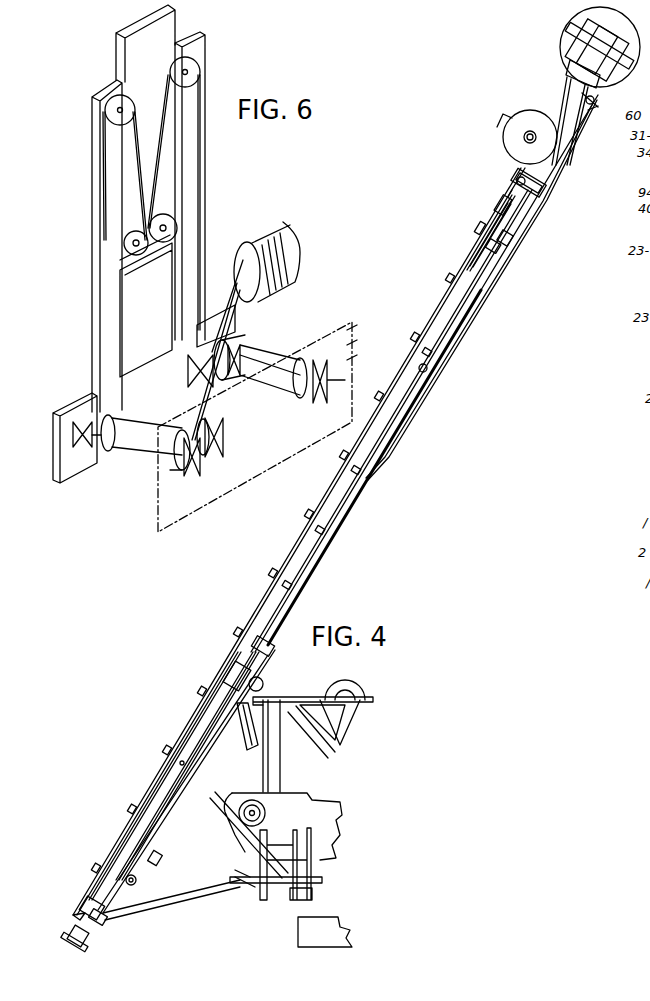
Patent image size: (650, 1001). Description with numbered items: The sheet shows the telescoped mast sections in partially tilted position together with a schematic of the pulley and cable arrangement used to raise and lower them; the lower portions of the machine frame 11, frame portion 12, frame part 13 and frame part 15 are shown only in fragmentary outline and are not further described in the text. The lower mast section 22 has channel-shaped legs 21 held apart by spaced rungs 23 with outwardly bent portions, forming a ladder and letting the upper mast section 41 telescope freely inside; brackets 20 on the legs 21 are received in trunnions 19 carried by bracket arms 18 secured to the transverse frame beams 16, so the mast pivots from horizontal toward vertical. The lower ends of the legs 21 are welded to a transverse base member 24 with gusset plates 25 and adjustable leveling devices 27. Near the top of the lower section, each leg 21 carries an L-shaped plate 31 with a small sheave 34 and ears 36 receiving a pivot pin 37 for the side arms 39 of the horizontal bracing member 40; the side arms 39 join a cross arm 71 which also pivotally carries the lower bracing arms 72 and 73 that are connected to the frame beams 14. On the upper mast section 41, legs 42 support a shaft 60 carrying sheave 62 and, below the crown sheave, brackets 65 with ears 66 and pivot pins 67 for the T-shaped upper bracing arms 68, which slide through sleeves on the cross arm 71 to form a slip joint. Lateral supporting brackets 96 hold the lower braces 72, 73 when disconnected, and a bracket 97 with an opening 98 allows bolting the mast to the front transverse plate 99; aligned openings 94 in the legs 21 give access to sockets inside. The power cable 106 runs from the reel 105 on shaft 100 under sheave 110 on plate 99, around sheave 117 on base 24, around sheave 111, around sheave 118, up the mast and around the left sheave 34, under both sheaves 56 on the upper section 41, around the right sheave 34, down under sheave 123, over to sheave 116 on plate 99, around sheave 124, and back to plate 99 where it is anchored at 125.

In FIG. 4, the support block 11 is at (322, 925).
In FIG. 4, the base machine frame 12 is at (320, 855).
In FIG. 4, the disc 13 is at (362, 693).
In FIG. 4, the frame beam 14 is at (281, 770).
In FIG. 4, the brace bar 15 is at (337, 753).
In FIG. 4, the transverse frame beam 16 is at (270, 688).
In FIG. 4, the bracket arm 18 is at (248, 733).
In FIG. 4, the trunnion 19 is at (262, 682).
In FIG. 4, the bracket 20 is at (242, 668).
In FIG. 4, the leg 21 is at (310, 562).
In FIG. 6, the lower mast section 22 is at (212, 218).
In FIG. 4, the rung 23 is at (450, 284).
In FIG. 6, the base member 24 is at (246, 321).
In FIG. 4, the base member 24 is at (80, 900).
In FIG. 4, the gusset plate 25 is at (76, 917).
In FIG. 4, the adjustable leveling device 27 is at (90, 942).
In FIG. 4, the bracket arm or plate 31 is at (500, 179).
In FIG. 6, the small sheave 34 is at (124, 103).
In FIG. 4, the small sheave 34 is at (496, 201).
In FIG. 4, the ear 36 is at (518, 196).
In FIG. 4, the pivot pin or bolt 37 is at (527, 181).
In FIG. 4, the side arm 39 is at (478, 278).
In FIG. 4, the horizontal bracing member 40 is at (474, 238).
In FIG. 6, the upper mast section 41 is at (142, 19).
In FIG. 4, the upper mast section 41 is at (558, 92).
In FIG. 4, the leg 42 is at (560, 104).
In FIG. 6, the sheave 56 is at (168, 216).
In FIG. 4, the shaft 60 is at (524, 137).
In FIG. 4, the sheave 62 is at (522, 113).
In FIG. 4, the bracket or plate 65 is at (570, 82).
In FIG. 4, the ear 66 is at (596, 97).
In FIG. 4, the pivot pin 67 is at (595, 105).
In FIG. 4, the upper bracing arm 68 is at (530, 208).
In FIG. 4, the cross arm 71 is at (428, 366).
In FIG. 4, the lower bracing arm 72 is at (233, 720).
In FIG. 4, the lower bracing arm 73 is at (312, 582).
In FIG. 4, the aligned opening 94 is at (470, 231).
In FIG. 4, the lateral supporting bracket 96 is at (278, 656).
In FIG. 4, the L-shaped bracket 97 is at (148, 865).
In FIG. 4, the opening 98 is at (160, 855).
In FIG. 6, the front transverse plate 99 is at (158, 512).
In FIG. 4, the front transverse plate 99 is at (240, 855).
In FIG. 4, the shaft 100 is at (257, 811).
In FIG. 6, the reel 105 is at (293, 240).
In FIG. 6, the power cable 106 is at (170, 162).
In FIG. 4, the power cable 106 is at (487, 212).
In FIG. 6, the sheave 110 is at (172, 468).
In FIG. 4, the sheave 110 is at (248, 887).
In FIG. 6, the sheave 111 is at (212, 418).
In FIG. 6, the sheave 116 is at (308, 358).
In FIG. 6, the sheave 117 is at (60, 470).
In FIG. 6, the sheave 118 is at (112, 410).
In FIG. 6, the sheave 123 is at (188, 370).
In FIG. 6, the sheave 124 is at (245, 340).
In FIG. 4, the sheave 124 is at (110, 922).
In FIG. 6, the cable anchor 125 is at (353, 358).